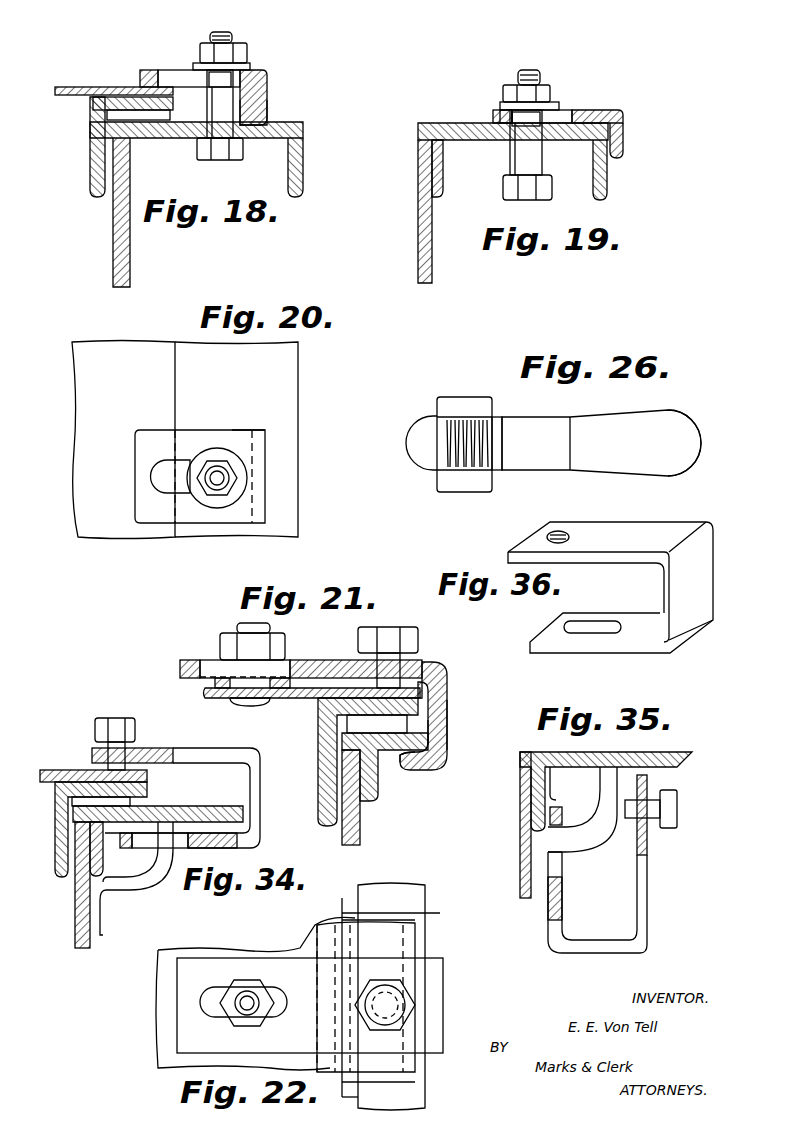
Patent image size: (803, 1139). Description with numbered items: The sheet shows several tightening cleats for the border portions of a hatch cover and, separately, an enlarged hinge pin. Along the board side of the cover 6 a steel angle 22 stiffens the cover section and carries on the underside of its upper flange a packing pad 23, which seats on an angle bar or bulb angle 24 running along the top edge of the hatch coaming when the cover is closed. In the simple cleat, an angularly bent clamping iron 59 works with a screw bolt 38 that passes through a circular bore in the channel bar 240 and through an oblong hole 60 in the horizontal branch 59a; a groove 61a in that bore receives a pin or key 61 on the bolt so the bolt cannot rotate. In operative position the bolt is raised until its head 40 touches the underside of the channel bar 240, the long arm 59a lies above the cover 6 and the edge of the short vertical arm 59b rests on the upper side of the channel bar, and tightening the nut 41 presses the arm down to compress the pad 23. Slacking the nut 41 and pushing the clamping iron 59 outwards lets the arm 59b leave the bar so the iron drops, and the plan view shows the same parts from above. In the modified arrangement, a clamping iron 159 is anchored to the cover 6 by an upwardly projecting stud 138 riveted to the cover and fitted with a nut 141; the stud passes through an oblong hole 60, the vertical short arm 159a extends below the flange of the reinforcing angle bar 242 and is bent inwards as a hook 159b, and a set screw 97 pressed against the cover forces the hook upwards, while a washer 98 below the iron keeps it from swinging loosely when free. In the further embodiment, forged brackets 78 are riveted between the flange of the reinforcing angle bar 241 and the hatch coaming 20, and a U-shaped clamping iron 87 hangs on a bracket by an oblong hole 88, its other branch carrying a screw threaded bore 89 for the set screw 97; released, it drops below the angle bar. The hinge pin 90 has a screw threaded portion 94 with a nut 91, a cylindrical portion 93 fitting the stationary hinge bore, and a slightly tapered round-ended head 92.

In FIG. 18, the cover 6 is at (82, 87).
In FIG. 20, the cover 6 is at (86, 410).
In FIG. 21, the cover 6 is at (205, 693).
In FIG. 34, the cover 6 is at (53, 770).
In FIG. 22, the cover 6 is at (225, 950).
In FIG. 18, the hatch coaming 20 is at (113, 232).
In FIG. 19, the hatch coaming 20 is at (432, 258).
In FIG. 21, the hatch coaming 20 is at (360, 826).
In FIG. 34, the hatch coaming 20 is at (75, 934).
In FIG. 35, the hatch coaming 20 is at (520, 880).
In FIG. 18, the steel angle 22 is at (90, 152).
In FIG. 21, the steel angle 22 is at (321, 724).
In FIG. 34, the steel angle 22 is at (62, 878).
In FIG. 18, the pad 23 is at (93, 104).
In FIG. 21, the pad 23 is at (378, 760).
In FIG. 34, the pad 23 is at (130, 802).
In FIG. 22, the pad 23 is at (395, 913).
In FIG. 18, the angle bar or bulb angle 24 is at (303, 165).
In FIG. 18, the screw bolt 38 is at (210, 35).
In FIG. 19, the screw bolt 38 is at (535, 73).
In FIG. 20, the screw bolt 38 is at (224, 472).
In FIG. 18, the head 40 is at (230, 150).
In FIG. 19, the head 40 is at (532, 192).
In FIG. 18, the nut 41 is at (247, 50).
In FIG. 19, the nut 41 is at (552, 95).
In FIG. 20, the nut 41 is at (237, 480).
In FIG. 18, the clamping iron 59 is at (268, 72).
In FIG. 19, the clamping iron 59 is at (623, 112).
In FIG. 20, the clamping iron 59 is at (265, 434).
In FIG. 18, the horizontal branch 59a is at (140, 72).
In FIG. 19, the horizontal branch 59a is at (493, 112).
In FIG. 18, the short vertical arm 59b is at (268, 118).
In FIG. 19, the short vertical arm 59b is at (623, 153).
In FIG. 18, the oblong hole 60 is at (178, 72).
In FIG. 19, the oblong hole 60 is at (575, 112).
In FIG. 20, the oblong hole 60 is at (160, 476).
In FIG. 21, the oblong hole 60 is at (290, 668).
In FIG. 22, the oblong hole 60 is at (208, 1003).
In FIG. 18, the pin or key 61 is at (205, 100).
In FIG. 19, the pin or key 61 is at (512, 162).
In FIG. 19, the groove 61a is at (493, 118).
In FIG. 34, the forged bracket 78 is at (152, 880).
In FIG. 35, the forged bracket 78 is at (600, 815).
In FIG. 36, the U-shaped clamping iron 87 is at (640, 548).
In FIG. 34, the U-shaped clamping iron 87 is at (258, 788).
In FIG. 35, the U-shaped clamping iron 87 is at (585, 955).
In FIG. 36, the oblong hole 88 is at (590, 625).
In FIG. 34, the oblong hole 88 is at (178, 848).
In FIG. 35, the oblong hole 88 is at (560, 857).
In FIG. 36, the screw threaded bore 89 is at (565, 542).
In FIG. 26, the pin 90 is at (418, 428).
In FIG. 26, the nut 91 is at (458, 402).
In FIG. 26, the tapered head 92 is at (668, 418).
In FIG. 26, the cylindrical portion 93 is at (535, 417).
In FIG. 26, the screw threaded portion 94 is at (496, 470).
In FIG. 21, the set screw 97 is at (388, 636).
In FIG. 34, the set screw 97 is at (108, 750).
In FIG. 35, the set screw 97 is at (648, 822).
In FIG. 22, the set screw 97 is at (393, 1007).
In FIG. 21, the washer 98 is at (215, 683).
In FIG. 21, the stud 138 is at (237, 628).
In FIG. 22, the stud 138 is at (245, 1005).
In FIG. 21, the nut 141 is at (220, 647).
In FIG. 21, the clamping iron 159 is at (438, 662).
In FIG. 22, the clamping iron 159 is at (300, 968).
In FIG. 21, the vertical short arm 159a is at (438, 746).
In FIG. 21, the hook 159b is at (410, 770).
In FIG. 19, the channel bar 240 is at (607, 185).
In FIG. 20, the channel bar 240 is at (290, 362).
In FIG. 34, the reinforcing angle bar 241 is at (103, 862).
In FIG. 35, the reinforcing angle bar 241 is at (655, 770).
In FIG. 21, the reinforcing angle bar 242 is at (430, 735).
In FIG. 22, the reinforcing angle bar 242 is at (425, 1092).